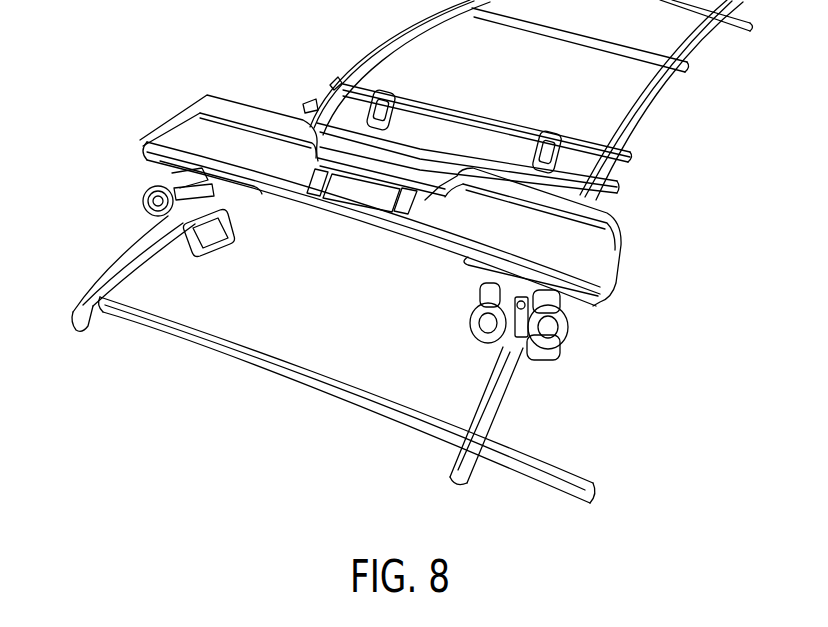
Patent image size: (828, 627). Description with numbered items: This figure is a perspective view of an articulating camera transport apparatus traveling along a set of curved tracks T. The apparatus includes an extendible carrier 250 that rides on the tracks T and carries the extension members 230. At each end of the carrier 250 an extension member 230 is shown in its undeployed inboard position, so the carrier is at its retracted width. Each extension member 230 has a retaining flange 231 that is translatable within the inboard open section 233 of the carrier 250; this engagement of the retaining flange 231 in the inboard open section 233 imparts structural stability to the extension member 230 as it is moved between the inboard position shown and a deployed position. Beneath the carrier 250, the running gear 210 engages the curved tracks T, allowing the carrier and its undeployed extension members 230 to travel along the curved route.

The extension member 230 is at (193, 130).
The retaining flange 231 is at (333, 200).
The inboard open section 233 is at (363, 207).
The extendible carrier 250 is at (140, 153).
The mounting bracket assembly 210 is at (563, 360).
The curved tracks T is at (490, 415).